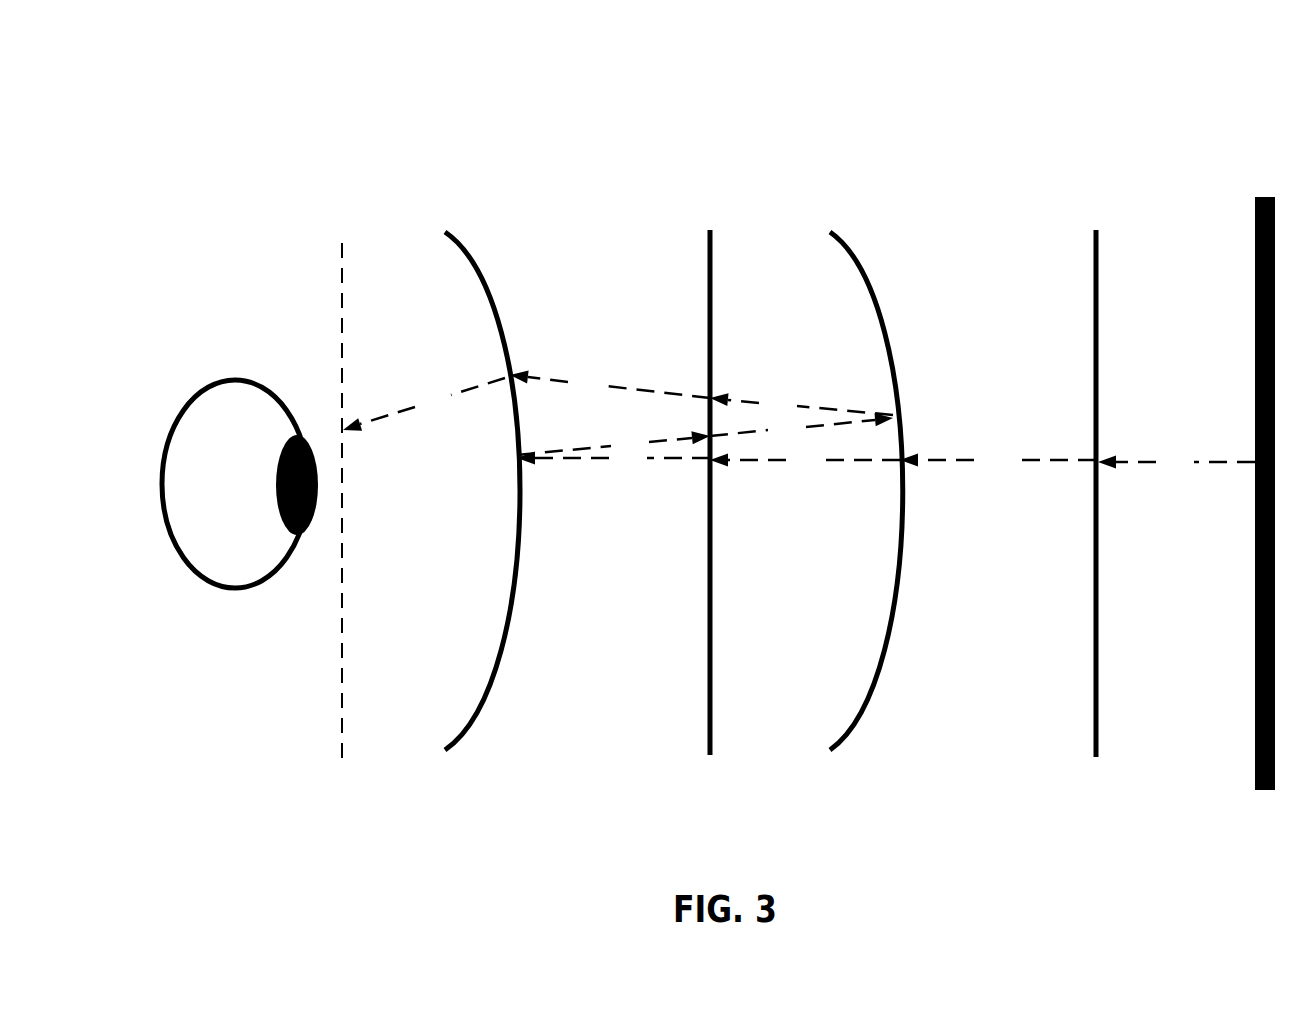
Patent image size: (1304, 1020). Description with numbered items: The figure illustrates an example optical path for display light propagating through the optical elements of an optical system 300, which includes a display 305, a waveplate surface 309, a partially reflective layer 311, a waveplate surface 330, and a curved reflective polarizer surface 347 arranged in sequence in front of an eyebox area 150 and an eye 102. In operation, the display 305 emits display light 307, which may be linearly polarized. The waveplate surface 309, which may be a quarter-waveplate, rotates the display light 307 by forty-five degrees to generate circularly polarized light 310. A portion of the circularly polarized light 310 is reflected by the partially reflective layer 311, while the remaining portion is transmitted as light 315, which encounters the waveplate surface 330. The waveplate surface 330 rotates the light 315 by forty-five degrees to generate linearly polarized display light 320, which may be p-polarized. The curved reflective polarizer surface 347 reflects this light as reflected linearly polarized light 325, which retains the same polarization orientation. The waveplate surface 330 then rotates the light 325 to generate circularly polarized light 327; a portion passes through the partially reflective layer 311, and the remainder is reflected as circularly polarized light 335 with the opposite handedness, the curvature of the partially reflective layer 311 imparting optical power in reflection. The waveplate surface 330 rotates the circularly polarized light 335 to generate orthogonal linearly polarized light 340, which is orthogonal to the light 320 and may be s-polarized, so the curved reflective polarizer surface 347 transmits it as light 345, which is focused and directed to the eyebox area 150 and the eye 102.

The optical system 300 is at (1172, 28).
The eye 102 is at (209, 364).
The eyebox area 150 is at (342, 243).
The curved reflective polarizer surface 347 is at (447, 230).
The waveplate surface 330 is at (710, 230).
The partially reflective layer 311 is at (831, 230).
The waveplate surface 309 is at (1096, 230).
The display 305 is at (1265, 197).
The display light 307 is at (1176, 461).
The circularly polarized light 310 is at (998, 459).
The light 315 is at (805, 459).
The linearly polarized display light 320 is at (613, 461).
The reflected linearly polarized light 325 is at (613, 440).
The circularly polarized light 327 is at (801, 425).
The circularly polarized light 335 is at (801, 401).
The orthogonal linearly polarized light 340 is at (610, 384).
The light 345 is at (424, 404).